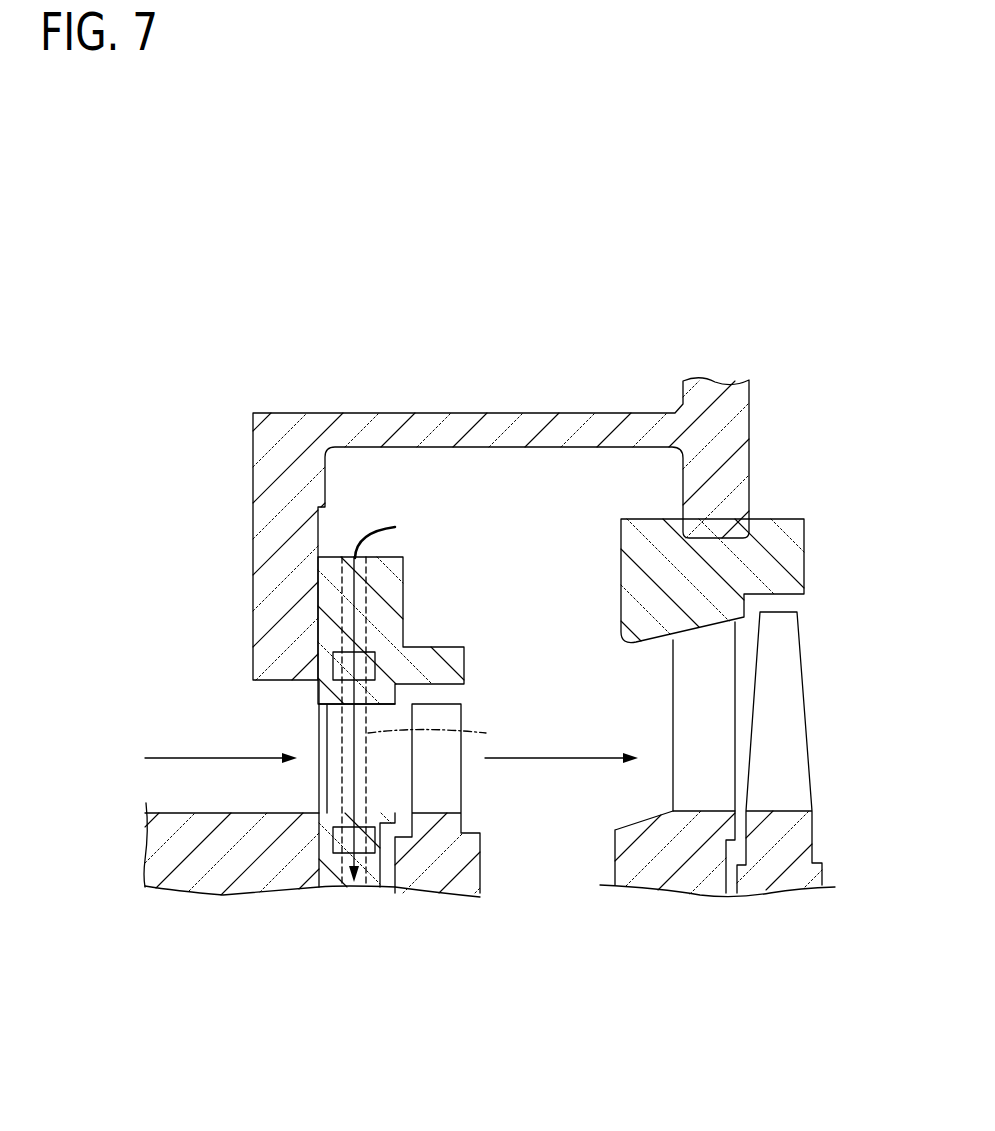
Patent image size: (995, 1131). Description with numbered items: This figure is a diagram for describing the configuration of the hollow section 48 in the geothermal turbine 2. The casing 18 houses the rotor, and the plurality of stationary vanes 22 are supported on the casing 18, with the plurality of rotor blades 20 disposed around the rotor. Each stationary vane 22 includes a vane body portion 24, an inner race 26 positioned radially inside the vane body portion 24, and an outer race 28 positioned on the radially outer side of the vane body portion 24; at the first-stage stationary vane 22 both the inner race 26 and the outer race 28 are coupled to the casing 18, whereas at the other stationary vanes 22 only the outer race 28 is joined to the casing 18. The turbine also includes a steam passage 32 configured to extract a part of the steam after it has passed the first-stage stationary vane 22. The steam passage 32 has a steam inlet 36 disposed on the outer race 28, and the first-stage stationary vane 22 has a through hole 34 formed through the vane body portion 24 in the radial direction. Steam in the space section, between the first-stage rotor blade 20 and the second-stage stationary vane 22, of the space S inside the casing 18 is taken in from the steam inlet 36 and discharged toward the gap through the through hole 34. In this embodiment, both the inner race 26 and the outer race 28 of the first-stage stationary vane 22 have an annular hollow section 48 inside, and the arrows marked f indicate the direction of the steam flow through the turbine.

The geothermal turbine 2 is at (618, 322).
The casing 18 is at (466, 413).
The space S is at (546, 486).
The outer race 28 is at (405, 570).
The steam inlet 36 is at (350, 557).
The steam passage 32 is at (373, 592).
The hollow section 48 is at (375, 667).
The through hole 34 is at (442, 732).
The vane body portion 24 is at (319, 722).
The inner race 26 is at (320, 860).
The rotor blade 20 is at (462, 798).
The stationary vane 22 is at (319, 788).
The fluid flow f is at (214, 757).